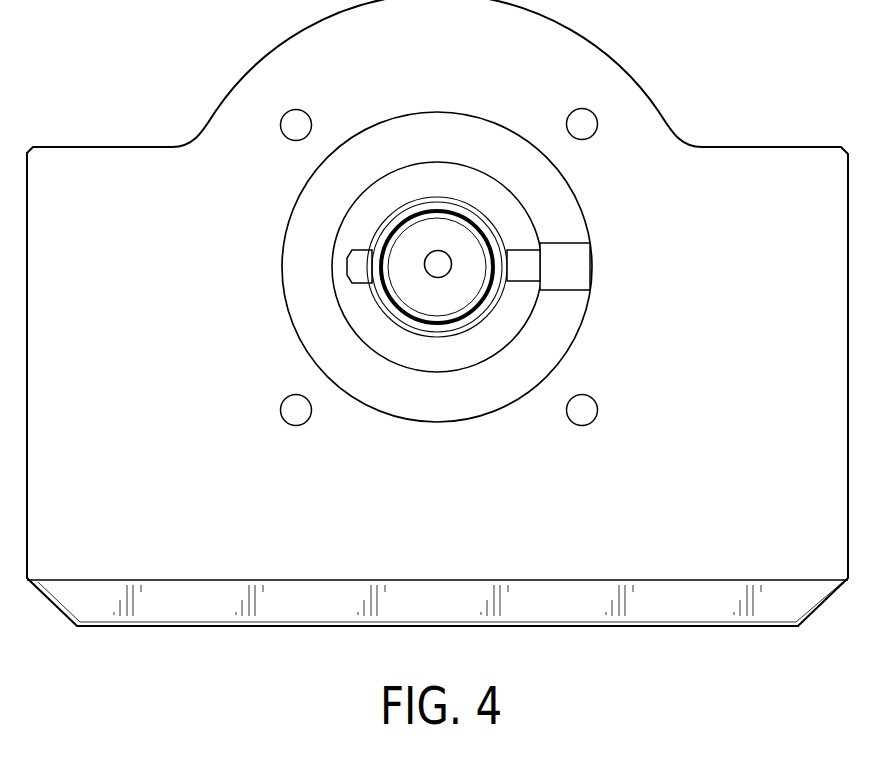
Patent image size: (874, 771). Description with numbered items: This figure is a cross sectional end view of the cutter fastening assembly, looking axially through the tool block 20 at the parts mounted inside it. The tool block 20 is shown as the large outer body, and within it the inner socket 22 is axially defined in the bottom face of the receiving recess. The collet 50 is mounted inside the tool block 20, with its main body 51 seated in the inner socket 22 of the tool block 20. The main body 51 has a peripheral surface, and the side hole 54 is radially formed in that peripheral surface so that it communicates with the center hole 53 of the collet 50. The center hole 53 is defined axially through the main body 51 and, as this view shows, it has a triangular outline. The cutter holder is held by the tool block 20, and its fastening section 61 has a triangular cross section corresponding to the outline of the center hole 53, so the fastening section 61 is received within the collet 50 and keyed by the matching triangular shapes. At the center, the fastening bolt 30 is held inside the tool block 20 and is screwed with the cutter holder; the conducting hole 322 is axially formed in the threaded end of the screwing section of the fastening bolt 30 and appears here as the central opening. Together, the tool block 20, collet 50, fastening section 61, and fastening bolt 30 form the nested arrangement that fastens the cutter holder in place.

The tool block 20 is at (90, 113).
The inner socket 22 is at (298, 200).
The fastening bolt 30 is at (382, 304).
The conducting hole 322 is at (432, 270).
The collet 50 is at (596, 201).
The main body 51 is at (404, 137).
The center hole 53 is at (498, 178).
The side hole 54 is at (558, 244).
The fastening section 61 is at (512, 326).